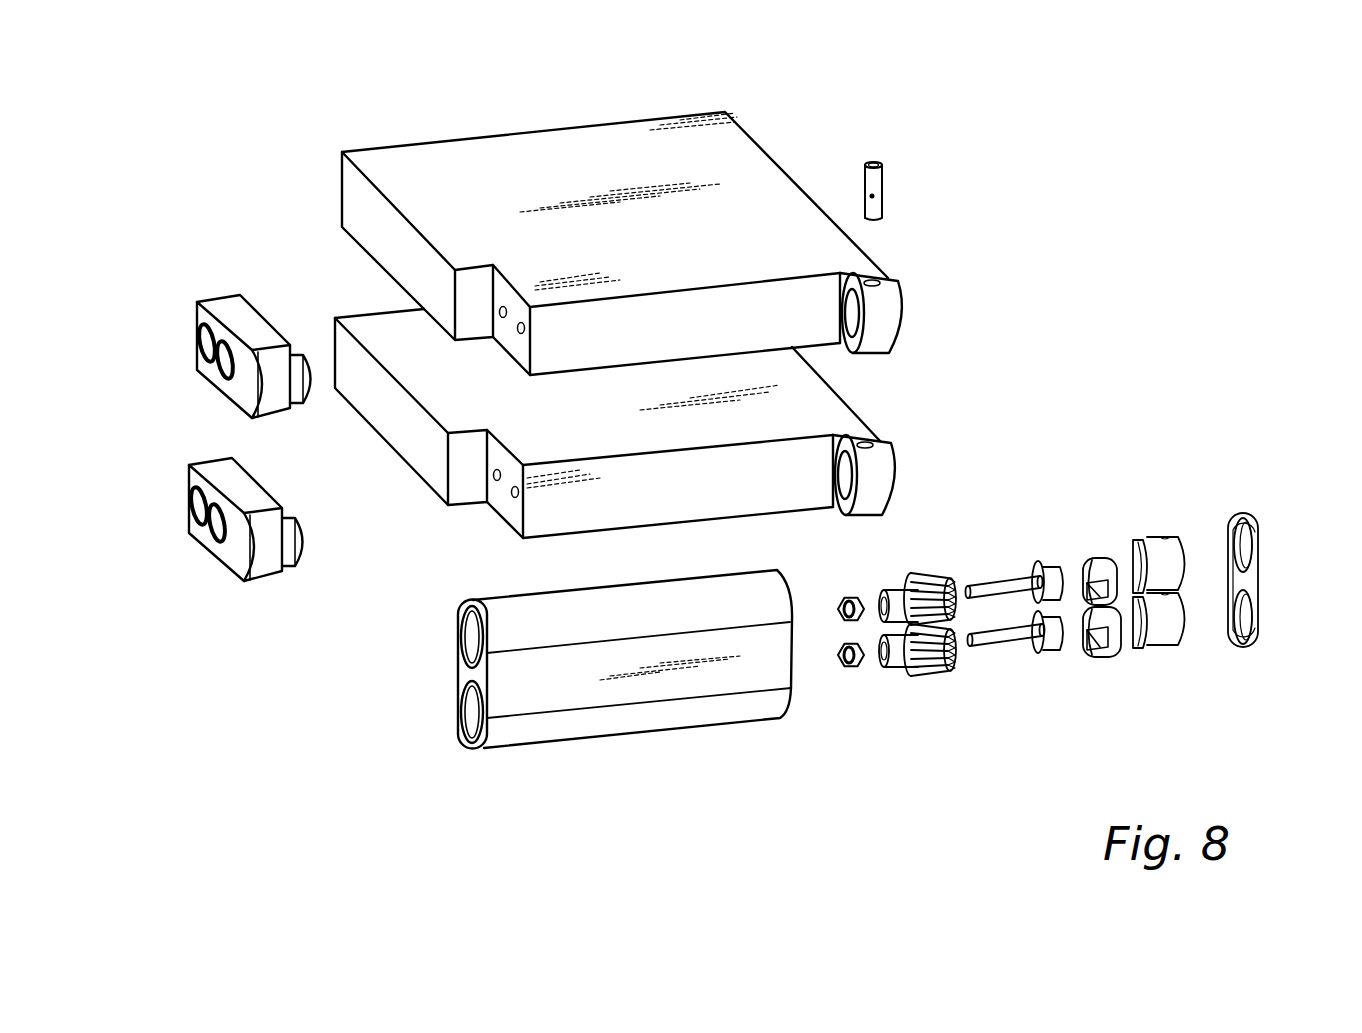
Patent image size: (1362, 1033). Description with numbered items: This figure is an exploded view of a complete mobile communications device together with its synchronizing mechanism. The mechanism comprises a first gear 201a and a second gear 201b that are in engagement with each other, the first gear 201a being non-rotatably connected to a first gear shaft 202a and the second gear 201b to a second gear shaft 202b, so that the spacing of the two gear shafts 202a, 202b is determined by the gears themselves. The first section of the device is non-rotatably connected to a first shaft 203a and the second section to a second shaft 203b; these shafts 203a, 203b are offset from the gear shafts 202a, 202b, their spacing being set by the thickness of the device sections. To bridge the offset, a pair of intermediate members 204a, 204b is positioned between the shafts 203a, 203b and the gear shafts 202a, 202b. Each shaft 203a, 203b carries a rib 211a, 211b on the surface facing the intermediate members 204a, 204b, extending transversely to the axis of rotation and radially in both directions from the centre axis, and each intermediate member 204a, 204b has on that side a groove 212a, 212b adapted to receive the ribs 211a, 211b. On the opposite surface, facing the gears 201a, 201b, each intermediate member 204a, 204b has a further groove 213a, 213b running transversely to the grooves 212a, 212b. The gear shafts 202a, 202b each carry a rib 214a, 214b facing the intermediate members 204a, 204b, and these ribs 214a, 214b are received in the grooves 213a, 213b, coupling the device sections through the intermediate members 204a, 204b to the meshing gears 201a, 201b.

The first gear 201a is at (922, 573).
The second gear 201b is at (932, 677).
The first gear shaft 202a is at (1003, 575).
The second gear shaft 202b is at (1003, 647).
The first shaft 203a is at (1192, 533).
The second shaft 203b is at (1200, 647).
The intermediate member 204a is at (1092, 560).
The intermediate member 204b is at (1103, 653).
The rib 211a is at (1143, 540).
The rib 211b is at (1150, 652).
The groove 212a is at (1107, 557).
The groove 212b is at (1127, 653).
The groove 213a is at (1085, 572).
The groove 213b is at (1077, 647).
The rib 214a is at (1060, 578).
The rib 214b is at (1063, 660).